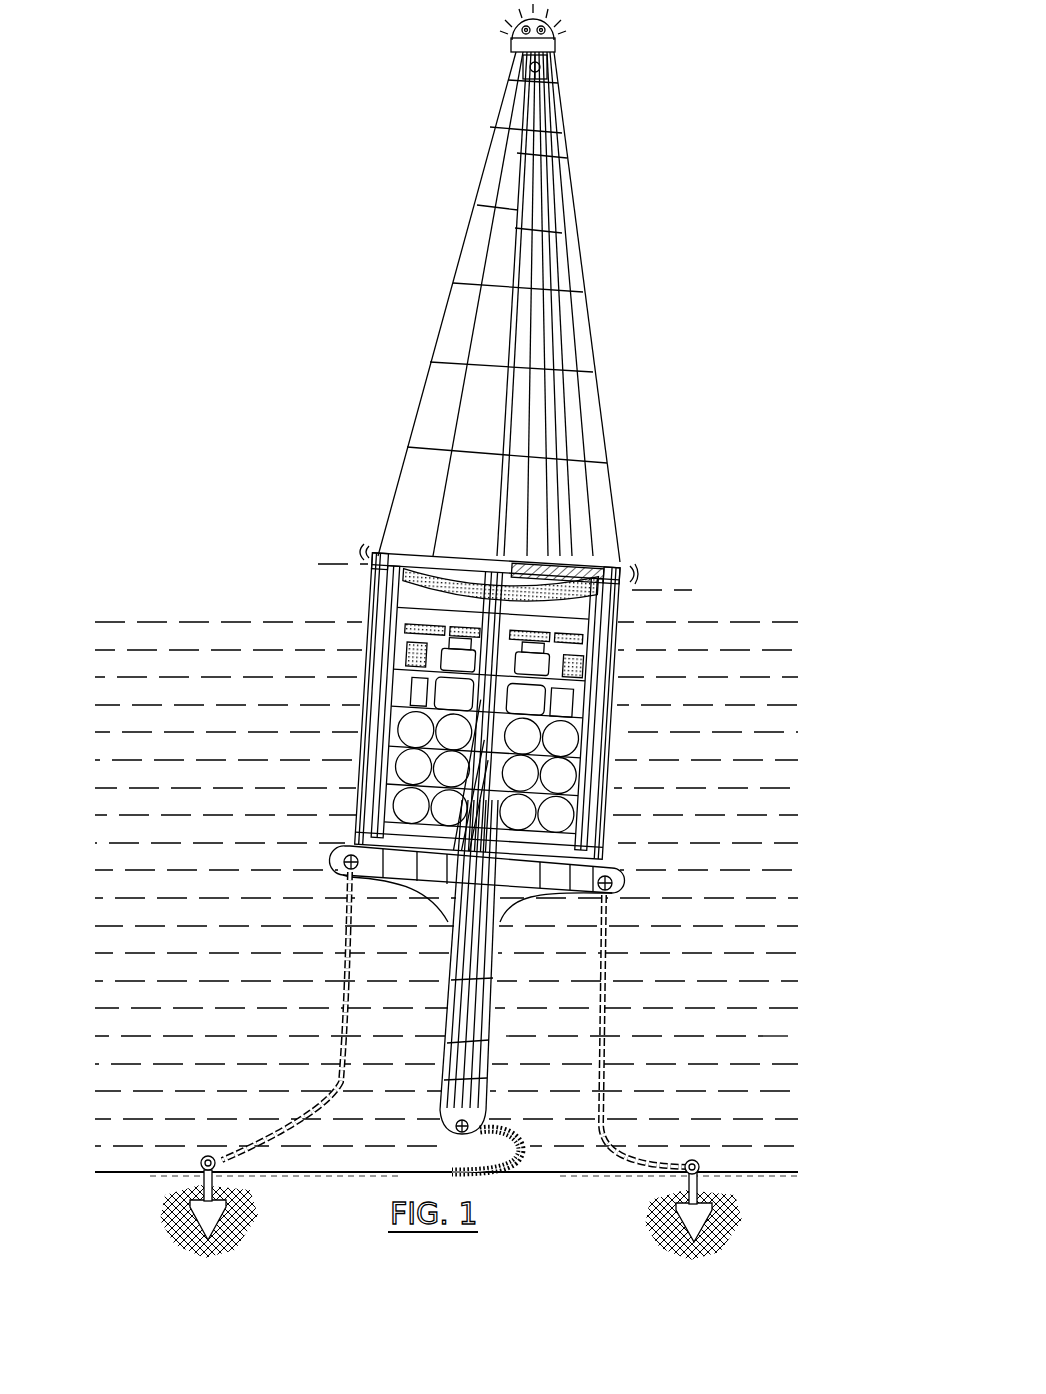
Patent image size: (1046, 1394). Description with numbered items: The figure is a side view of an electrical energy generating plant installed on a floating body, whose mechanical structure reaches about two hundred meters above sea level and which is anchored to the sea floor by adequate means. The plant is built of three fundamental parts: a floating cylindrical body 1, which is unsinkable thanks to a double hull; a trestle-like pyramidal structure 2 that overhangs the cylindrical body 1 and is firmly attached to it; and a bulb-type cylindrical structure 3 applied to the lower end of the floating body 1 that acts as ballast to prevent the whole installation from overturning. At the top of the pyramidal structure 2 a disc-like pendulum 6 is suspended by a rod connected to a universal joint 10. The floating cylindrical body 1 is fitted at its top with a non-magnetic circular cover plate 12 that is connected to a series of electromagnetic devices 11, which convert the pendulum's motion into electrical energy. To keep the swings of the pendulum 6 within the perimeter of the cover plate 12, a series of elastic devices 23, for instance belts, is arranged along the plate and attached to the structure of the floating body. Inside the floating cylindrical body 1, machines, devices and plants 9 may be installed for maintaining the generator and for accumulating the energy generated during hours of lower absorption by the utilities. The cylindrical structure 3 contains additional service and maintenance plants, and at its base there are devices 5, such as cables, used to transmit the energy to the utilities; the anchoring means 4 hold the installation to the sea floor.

The floating cylindrical body 1 is at (355, 722).
The trestle-like pyramidal structure 2 is at (445, 283).
The cylindrical structure 3 is at (502, 999).
The anchor chains 4 is at (208, 1155).
The devices 5 is at (455, 1160).
The disc-like pendulum 6 is at (595, 556).
The machines, devices and plants 9 is at (560, 777).
The universal joint 10 is at (545, 72).
The electromagnetic devices 11 is at (387, 590).
The non-magnetic circular cover plate 12 is at (462, 560).
The elastic devices 23 is at (402, 547).